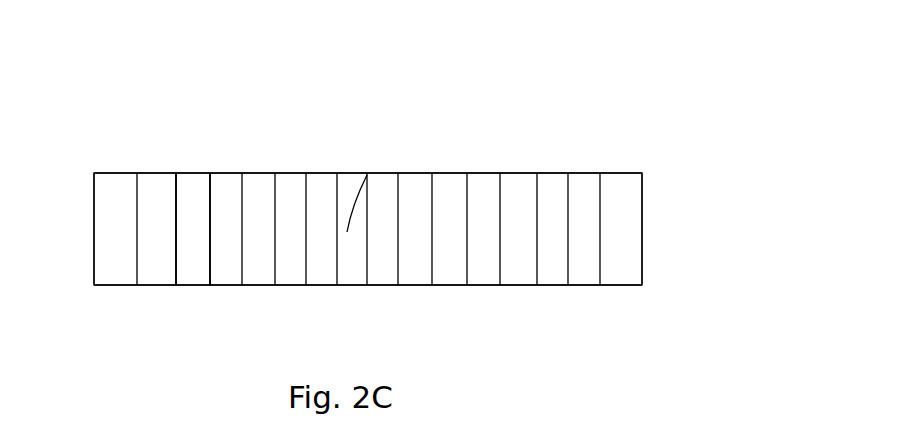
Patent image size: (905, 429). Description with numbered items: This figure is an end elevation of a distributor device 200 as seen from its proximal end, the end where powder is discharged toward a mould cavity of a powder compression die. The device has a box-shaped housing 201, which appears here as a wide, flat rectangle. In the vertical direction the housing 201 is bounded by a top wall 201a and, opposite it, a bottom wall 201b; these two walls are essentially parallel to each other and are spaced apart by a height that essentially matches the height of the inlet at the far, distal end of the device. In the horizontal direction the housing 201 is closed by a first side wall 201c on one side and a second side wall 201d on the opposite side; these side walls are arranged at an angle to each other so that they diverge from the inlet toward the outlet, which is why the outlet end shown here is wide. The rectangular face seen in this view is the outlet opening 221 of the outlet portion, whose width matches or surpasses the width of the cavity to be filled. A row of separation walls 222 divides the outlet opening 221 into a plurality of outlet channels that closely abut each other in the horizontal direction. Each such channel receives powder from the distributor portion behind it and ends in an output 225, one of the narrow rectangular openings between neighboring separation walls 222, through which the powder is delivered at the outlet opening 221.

The distributor device 200 is at (622, 132).
The box-shaped housing 201 is at (314, 173).
The top wall 201a is at (459, 173).
The bottom wall 201b is at (460, 287).
The first side wall 201c is at (93, 233).
The second side wall 201d is at (645, 234).
The outlet opening 221 is at (367, 175).
The separation walls 222 is at (174, 232).
The output 225 is at (190, 233).